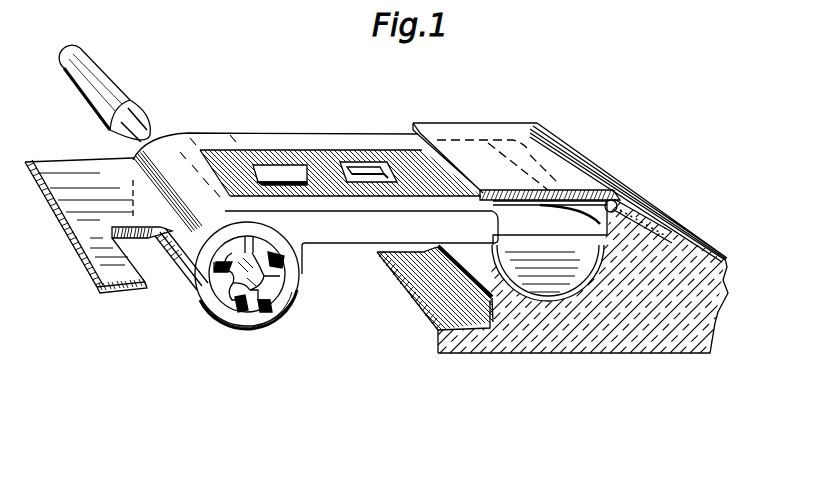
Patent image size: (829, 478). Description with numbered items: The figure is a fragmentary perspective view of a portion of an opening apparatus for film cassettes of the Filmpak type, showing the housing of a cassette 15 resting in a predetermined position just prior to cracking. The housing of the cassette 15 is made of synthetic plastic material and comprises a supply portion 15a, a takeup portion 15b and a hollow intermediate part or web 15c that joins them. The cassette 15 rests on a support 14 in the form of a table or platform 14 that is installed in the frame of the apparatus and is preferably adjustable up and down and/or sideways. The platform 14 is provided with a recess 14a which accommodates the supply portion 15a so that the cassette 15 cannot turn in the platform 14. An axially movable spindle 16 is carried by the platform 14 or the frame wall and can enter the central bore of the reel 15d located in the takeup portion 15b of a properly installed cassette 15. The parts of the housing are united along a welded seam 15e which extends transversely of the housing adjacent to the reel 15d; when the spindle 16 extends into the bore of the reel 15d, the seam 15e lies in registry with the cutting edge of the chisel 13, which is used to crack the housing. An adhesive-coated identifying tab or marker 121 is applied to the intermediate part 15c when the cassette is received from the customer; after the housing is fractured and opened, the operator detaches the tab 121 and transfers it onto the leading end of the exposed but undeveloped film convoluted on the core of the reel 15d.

The chisel 13 is at (133, 175).
The support 14 is at (613, 338).
The recess 14a is at (606, 200).
The film cassette 15 is at (322, 135).
The supply portion 15a is at (532, 257).
The takeup portion 15b is at (218, 307).
The intermediate part 15c is at (337, 245).
The reel 15d is at (250, 305).
The welded seam 15e is at (183, 262).
The spindle 16 is at (85, 50).
The identifying tab 121 is at (268, 163).